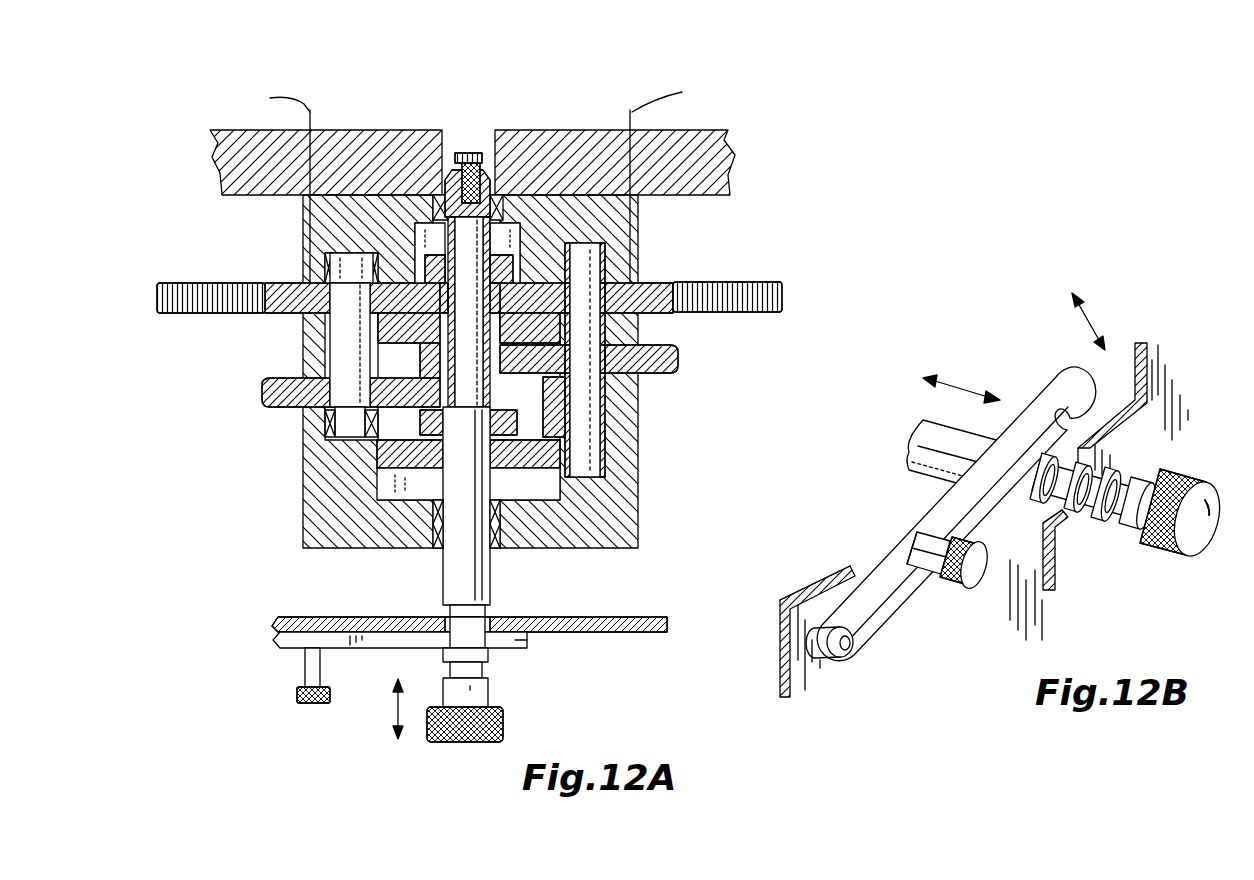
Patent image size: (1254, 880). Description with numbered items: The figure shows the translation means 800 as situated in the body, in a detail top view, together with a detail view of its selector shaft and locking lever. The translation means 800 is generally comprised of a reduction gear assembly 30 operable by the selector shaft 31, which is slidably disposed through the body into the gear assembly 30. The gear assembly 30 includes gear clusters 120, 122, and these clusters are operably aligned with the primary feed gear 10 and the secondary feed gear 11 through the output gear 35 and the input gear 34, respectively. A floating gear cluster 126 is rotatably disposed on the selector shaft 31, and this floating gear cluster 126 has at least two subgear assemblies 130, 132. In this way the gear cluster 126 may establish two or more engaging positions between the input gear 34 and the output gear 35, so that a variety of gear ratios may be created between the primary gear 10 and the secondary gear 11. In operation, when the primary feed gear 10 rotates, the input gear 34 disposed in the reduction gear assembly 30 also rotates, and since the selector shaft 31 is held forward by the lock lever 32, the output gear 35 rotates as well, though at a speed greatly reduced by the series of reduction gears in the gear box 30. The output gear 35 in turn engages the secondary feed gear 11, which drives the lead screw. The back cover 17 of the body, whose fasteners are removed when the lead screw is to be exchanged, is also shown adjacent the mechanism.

In FIG. 12A, the primary feed gear 10 is at (772, 283).
In FIG. 12A, the secondary feed gear 11 is at (176, 315).
In FIG. 12A, the back cover 17 is at (637, 619).
In FIG. 12B, the back cover 17 is at (910, 625).
In FIG. 12A, the reduction gear assembly 30 is at (640, 497).
In FIG. 12A, the selector shaft 31 is at (448, 745).
In FIG. 12B, the selector shaft 31 is at (1123, 481).
In FIG. 12A, the lock lever 32 is at (530, 650).
In FIG. 12B, the lock lever 32 is at (1062, 378).
In FIG. 12A, the input gear 34 is at (272, 314).
In FIG. 12A, the output gear 35 is at (657, 314).
In FIG. 12A, the gear cluster 120 is at (347, 253).
In FIG. 12A, the gear cluster 122 is at (588, 243).
In FIG. 12A, the floating gear cluster 126 is at (486, 152).
In FIG. 12A, the subgear assembly 130 is at (510, 255).
In FIG. 12A, the subgear assembly 132 is at (400, 500).
In FIG. 12A, the translation means 800 is at (489, 432).